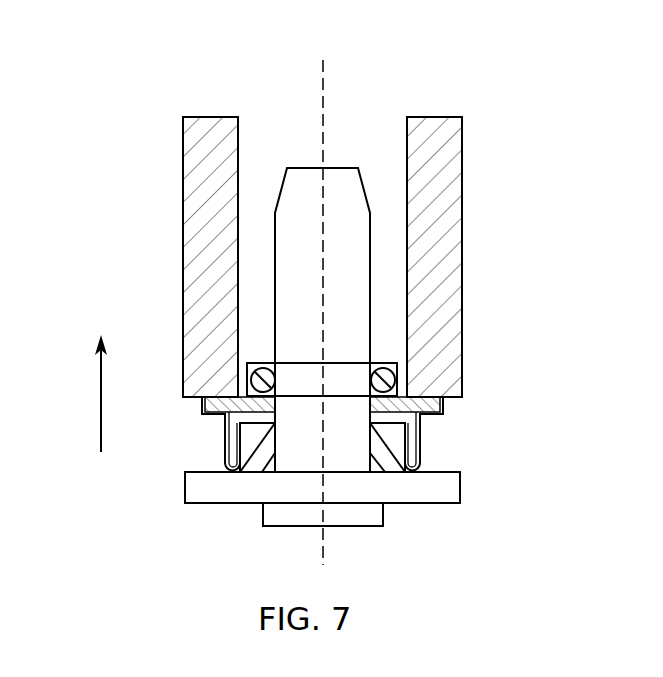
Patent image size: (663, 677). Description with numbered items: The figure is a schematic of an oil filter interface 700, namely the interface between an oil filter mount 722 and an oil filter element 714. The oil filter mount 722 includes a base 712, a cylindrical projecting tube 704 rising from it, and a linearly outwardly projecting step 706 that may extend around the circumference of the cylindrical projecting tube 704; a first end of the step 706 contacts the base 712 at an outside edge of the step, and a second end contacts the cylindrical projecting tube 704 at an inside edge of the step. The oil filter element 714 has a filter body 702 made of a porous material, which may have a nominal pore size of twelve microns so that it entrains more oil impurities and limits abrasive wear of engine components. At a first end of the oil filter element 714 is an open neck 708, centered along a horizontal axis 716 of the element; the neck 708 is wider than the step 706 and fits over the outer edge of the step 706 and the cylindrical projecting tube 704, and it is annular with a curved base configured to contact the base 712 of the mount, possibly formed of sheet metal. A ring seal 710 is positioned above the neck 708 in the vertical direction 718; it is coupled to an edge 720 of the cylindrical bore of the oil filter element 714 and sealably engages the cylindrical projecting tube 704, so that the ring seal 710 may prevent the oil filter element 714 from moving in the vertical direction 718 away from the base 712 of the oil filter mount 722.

The oil filter interface 700 is at (208, 95).
The filter body 702 is at (461, 250).
The cylindrical projecting tube 704 is at (340, 182).
The linearly outwardly projecting step 706 is at (236, 462).
The open neck 708 is at (420, 440).
The ring seal 710 is at (281, 362).
The base 712 is at (445, 491).
The oil filter element 714 is at (476, 185).
The horizontal axis 716 is at (323, 70).
The vertical direction 718 is at (100, 408).
The edge of the cylindrical bore 720 is at (203, 412).
The oil filter mount 722 is at (168, 507).